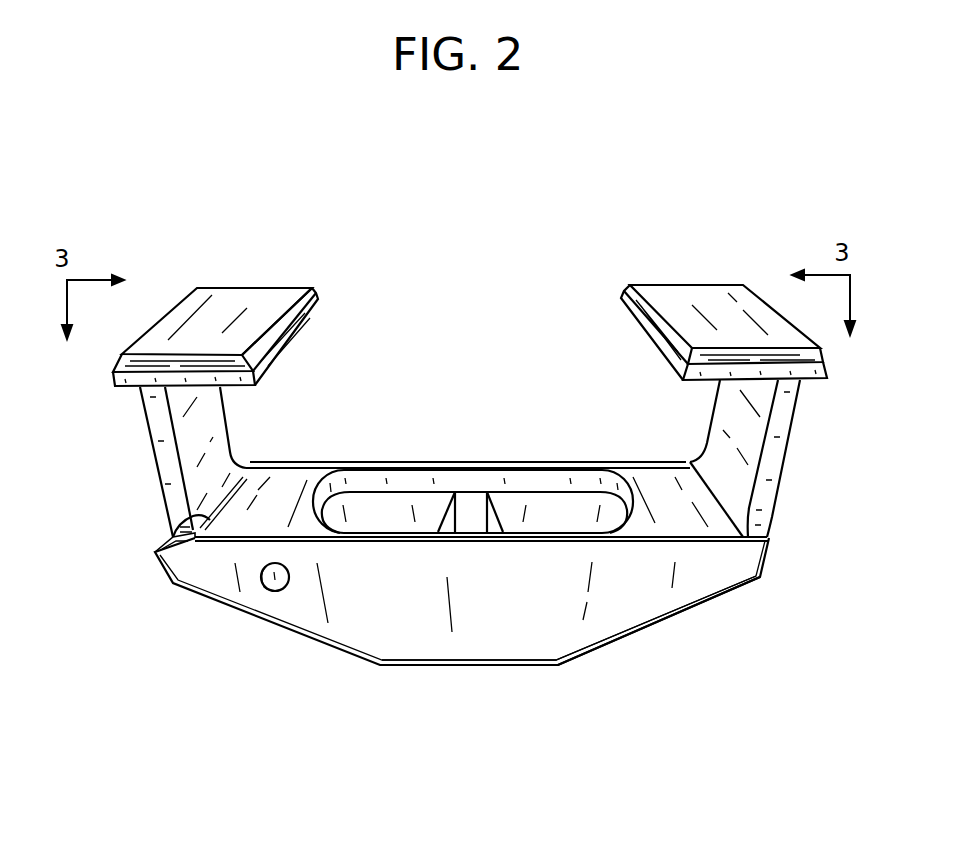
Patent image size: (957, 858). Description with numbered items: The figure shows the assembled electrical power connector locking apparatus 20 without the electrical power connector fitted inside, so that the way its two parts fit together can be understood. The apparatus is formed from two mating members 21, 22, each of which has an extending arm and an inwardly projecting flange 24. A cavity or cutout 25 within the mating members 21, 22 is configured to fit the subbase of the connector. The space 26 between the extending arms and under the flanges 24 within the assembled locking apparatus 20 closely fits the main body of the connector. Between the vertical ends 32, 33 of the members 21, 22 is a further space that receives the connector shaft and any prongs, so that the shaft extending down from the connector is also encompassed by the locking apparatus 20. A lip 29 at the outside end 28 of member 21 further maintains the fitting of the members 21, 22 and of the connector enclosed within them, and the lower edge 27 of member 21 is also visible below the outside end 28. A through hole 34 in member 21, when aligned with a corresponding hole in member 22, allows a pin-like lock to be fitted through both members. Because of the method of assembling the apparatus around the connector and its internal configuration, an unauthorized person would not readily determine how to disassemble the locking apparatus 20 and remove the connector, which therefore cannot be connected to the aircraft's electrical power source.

The electrical power connector locking apparatus 20 is at (519, 303).
The member 21 is at (228, 522).
The member 22 is at (152, 490).
The inwardly projecting flange 24 is at (183, 323).
The cavity or cutout 25 is at (463, 480).
The space 26 is at (428, 348).
The bottom edge 27 is at (578, 658).
The outside end 28 is at (218, 587).
The lip 29 is at (155, 550).
The vertical end 32 is at (474, 513).
The vertical end 33 is at (452, 517).
The through hole 34 is at (277, 592).